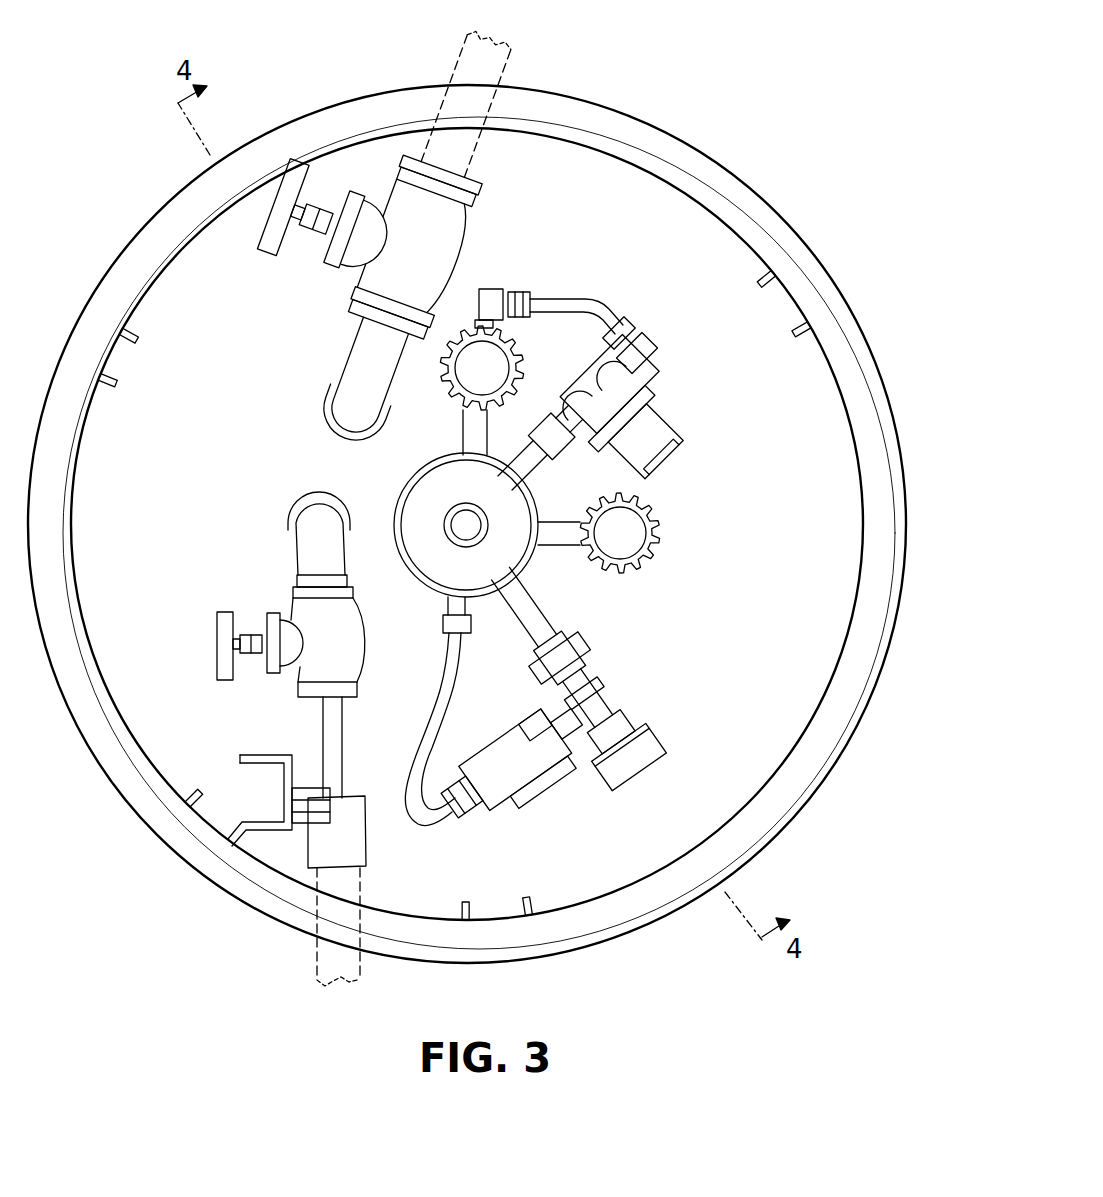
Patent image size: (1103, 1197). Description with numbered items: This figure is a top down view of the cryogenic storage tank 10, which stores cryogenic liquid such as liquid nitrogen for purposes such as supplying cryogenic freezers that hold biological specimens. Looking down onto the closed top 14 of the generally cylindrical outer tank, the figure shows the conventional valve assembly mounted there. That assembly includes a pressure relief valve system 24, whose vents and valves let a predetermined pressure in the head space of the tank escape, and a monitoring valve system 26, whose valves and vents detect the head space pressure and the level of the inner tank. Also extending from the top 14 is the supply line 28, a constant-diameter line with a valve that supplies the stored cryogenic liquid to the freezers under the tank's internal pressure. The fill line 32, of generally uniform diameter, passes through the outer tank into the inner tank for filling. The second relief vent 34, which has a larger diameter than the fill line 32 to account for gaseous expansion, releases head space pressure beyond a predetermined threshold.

The cryogenic storage tank 10 is at (659, 82).
The closed top 14 is at (262, 342).
The pressure relief valve system 24 is at (563, 297).
The monitoring valve system 26 is at (500, 816).
The supply line 28 is at (332, 738).
The fill line 32 is at (373, 360).
The second relief vent 34 is at (655, 737).